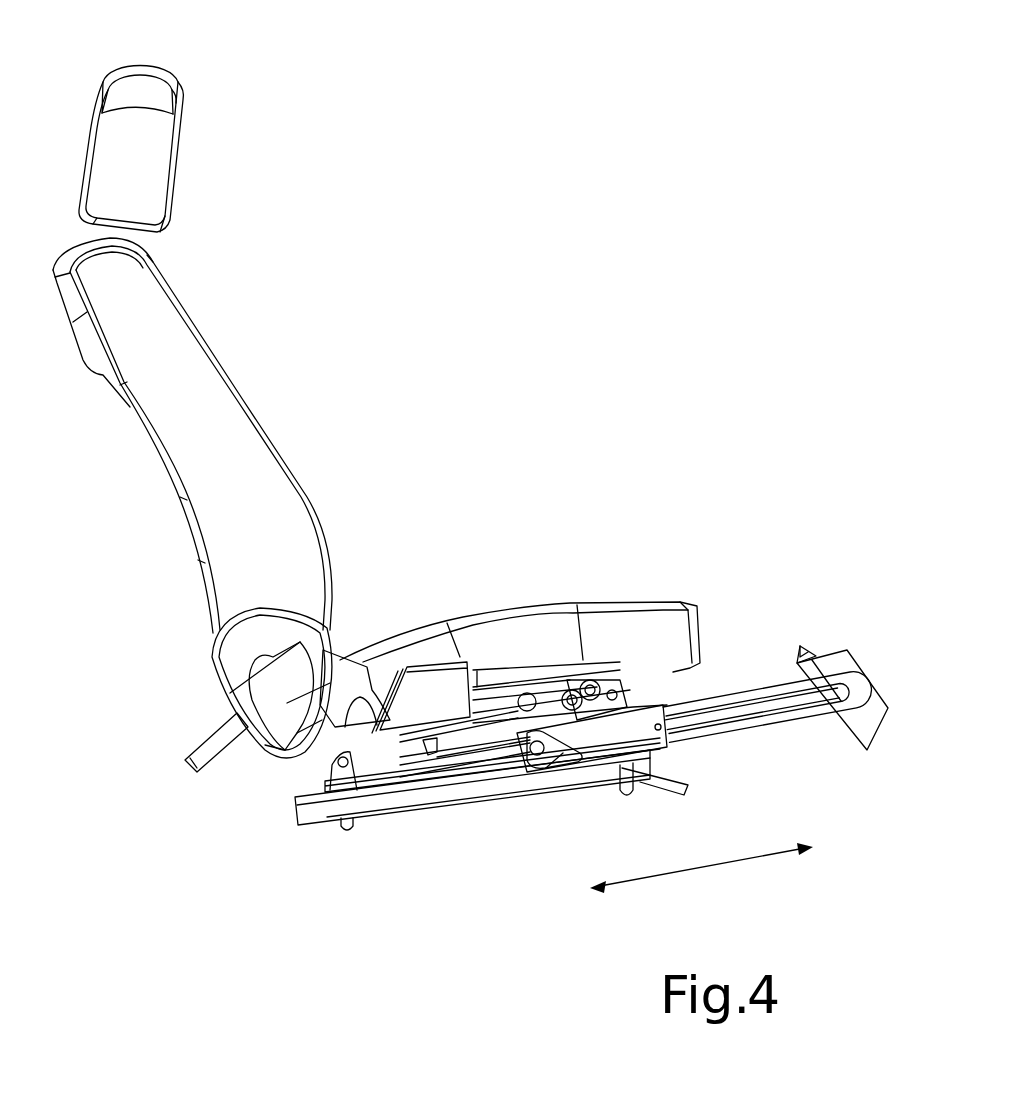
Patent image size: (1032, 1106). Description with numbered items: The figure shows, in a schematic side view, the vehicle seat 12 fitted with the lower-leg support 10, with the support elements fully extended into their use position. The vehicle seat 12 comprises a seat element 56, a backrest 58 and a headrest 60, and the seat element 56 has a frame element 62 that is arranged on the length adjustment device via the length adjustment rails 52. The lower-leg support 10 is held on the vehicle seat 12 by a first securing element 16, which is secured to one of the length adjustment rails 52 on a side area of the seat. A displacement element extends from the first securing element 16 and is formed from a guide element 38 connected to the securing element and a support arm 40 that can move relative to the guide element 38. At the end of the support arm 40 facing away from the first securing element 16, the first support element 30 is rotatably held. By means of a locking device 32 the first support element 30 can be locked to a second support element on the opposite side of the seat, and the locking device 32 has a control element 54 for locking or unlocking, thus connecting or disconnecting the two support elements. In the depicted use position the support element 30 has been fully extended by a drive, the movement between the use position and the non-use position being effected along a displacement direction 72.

The lower-leg support 10 is at (798, 762).
The vehicle seat 12 is at (494, 348).
The first securing element 16 is at (557, 760).
The first support element 30 is at (882, 713).
The locking device 32 is at (816, 648).
The guide element 38 is at (625, 765).
The support arm 40 is at (743, 697).
The length adjustment rails 52 is at (330, 807).
The control element 54 is at (800, 657).
The seat element 56 is at (525, 607).
The backrest 58 is at (207, 470).
The headrest 60 is at (165, 88).
The frame element 62 is at (493, 690).
The displacement direction 72 is at (700, 872).